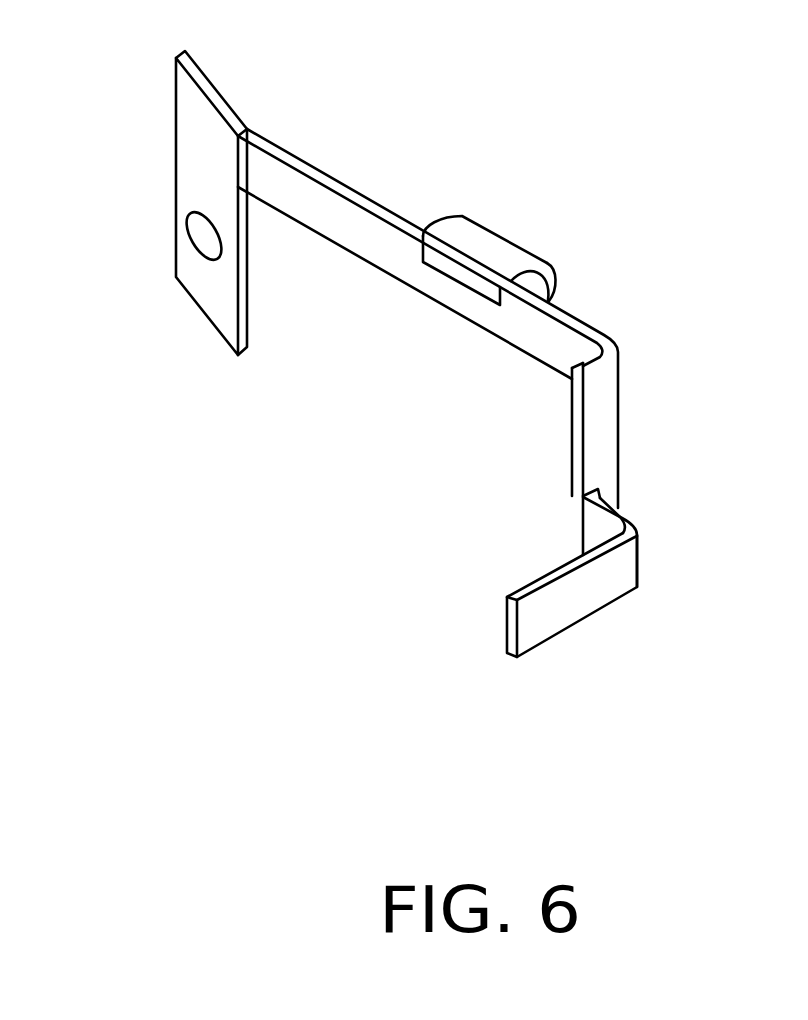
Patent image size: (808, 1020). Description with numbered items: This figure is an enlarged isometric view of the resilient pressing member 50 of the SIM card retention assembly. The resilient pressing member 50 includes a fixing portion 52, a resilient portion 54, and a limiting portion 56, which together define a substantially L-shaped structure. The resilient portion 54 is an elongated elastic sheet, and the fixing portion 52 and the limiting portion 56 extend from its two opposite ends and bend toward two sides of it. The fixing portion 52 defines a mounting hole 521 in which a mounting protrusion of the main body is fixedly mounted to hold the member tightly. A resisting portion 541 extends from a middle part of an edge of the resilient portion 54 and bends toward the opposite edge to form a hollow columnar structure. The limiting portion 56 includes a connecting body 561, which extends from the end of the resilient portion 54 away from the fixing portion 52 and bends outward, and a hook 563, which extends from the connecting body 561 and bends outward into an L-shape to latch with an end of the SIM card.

The resilient pressing member 50 is at (335, 38).
The fixing portion 52 is at (208, 198).
The mounting hole 521 is at (203, 233).
The resilient portion 54 is at (428, 318).
The resisting portion 541 is at (490, 252).
The limiting portion 56 is at (653, 436).
The connecting body 561 is at (602, 430).
The hook 563 is at (590, 585).